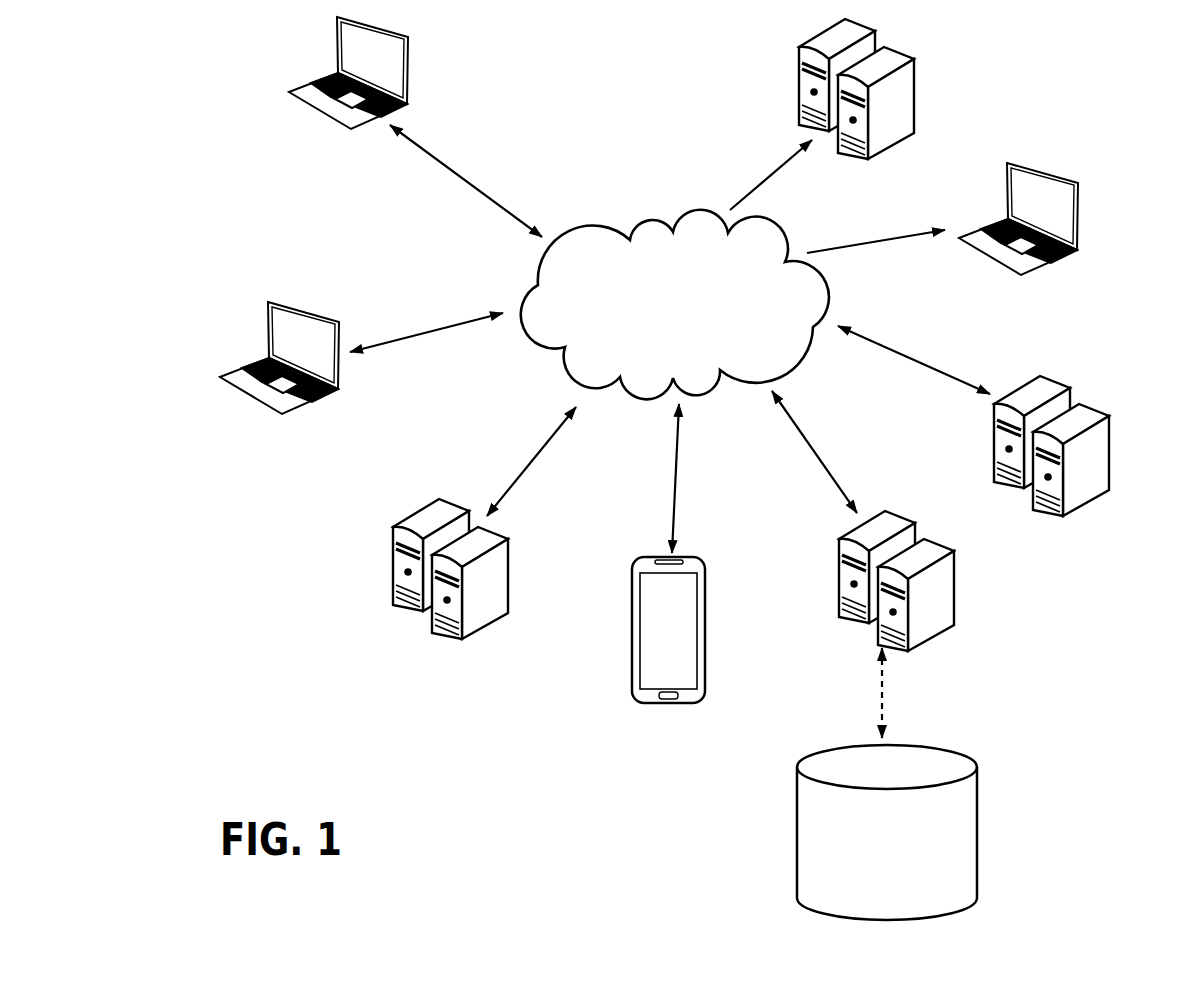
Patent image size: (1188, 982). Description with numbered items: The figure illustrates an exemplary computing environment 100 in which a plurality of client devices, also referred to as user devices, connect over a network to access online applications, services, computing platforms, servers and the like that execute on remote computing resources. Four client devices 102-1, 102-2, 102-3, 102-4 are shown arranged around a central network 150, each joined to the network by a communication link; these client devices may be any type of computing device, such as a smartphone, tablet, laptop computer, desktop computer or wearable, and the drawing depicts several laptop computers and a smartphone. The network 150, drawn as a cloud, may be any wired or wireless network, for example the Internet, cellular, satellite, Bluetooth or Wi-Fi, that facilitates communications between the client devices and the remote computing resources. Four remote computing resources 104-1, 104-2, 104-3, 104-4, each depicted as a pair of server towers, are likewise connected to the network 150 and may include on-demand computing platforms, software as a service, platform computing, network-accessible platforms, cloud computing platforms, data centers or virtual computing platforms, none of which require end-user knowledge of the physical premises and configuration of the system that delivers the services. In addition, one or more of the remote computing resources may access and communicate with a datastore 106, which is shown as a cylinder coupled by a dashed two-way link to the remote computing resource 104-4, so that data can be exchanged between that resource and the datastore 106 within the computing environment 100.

The computing environment 100 is at (1141, 40).
The client device 102-1 is at (315, 80).
The client device 102-2 is at (242, 362).
The client device 102-3 is at (687, 705).
The client device 102-4 is at (1043, 177).
The remote computing resource 104-1 is at (903, 53).
The remote computing resource 104-2 is at (412, 514).
The remote computing resource 104-3 is at (1093, 500).
The remote computing resource 104-4 is at (887, 510).
The datastore 106 is at (940, 746).
The network 150 is at (703, 334).